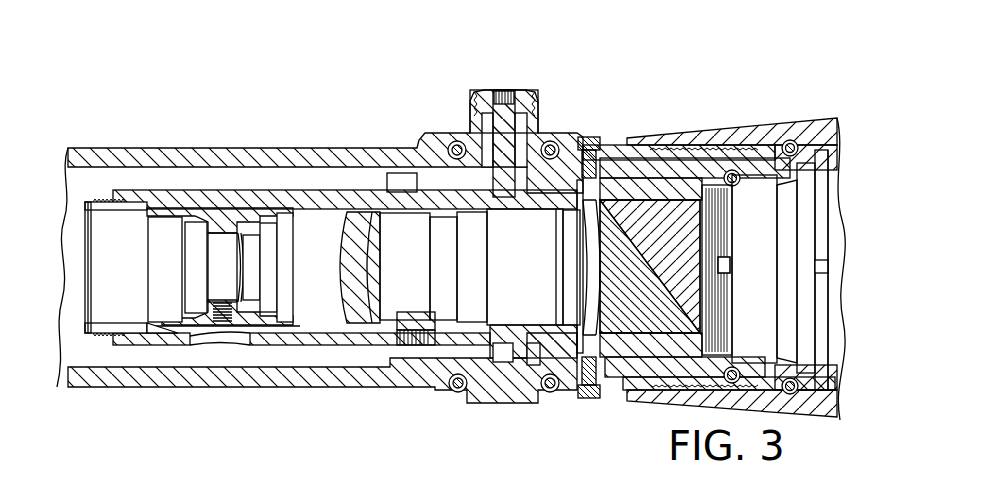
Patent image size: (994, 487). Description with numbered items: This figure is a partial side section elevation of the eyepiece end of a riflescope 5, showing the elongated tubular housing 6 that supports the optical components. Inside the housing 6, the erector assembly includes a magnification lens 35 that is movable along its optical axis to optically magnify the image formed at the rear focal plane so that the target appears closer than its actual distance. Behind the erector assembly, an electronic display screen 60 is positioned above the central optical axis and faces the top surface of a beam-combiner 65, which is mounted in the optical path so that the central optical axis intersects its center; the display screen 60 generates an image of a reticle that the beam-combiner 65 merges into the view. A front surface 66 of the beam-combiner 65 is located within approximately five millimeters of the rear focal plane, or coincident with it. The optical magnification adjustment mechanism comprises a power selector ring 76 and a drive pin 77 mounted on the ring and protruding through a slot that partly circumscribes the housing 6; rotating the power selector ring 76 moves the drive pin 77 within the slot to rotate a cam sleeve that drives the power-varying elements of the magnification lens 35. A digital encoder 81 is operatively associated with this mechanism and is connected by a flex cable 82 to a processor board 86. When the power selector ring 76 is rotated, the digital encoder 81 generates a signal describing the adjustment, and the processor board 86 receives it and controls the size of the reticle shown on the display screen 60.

The riflescope 5 is at (372, 89).
The housing 6 is at (343, 148).
The magnification lens 35 is at (352, 297).
The electronic display screen 60 is at (672, 190).
The beam-combiner 65 is at (638, 317).
The front surface 66 is at (597, 307).
The power selector ring 76 is at (470, 112).
The drive pin 77 is at (488, 92).
The digital encoder 81 is at (577, 140).
The flex cable 82 is at (590, 158).
The processor board 86 is at (645, 178).